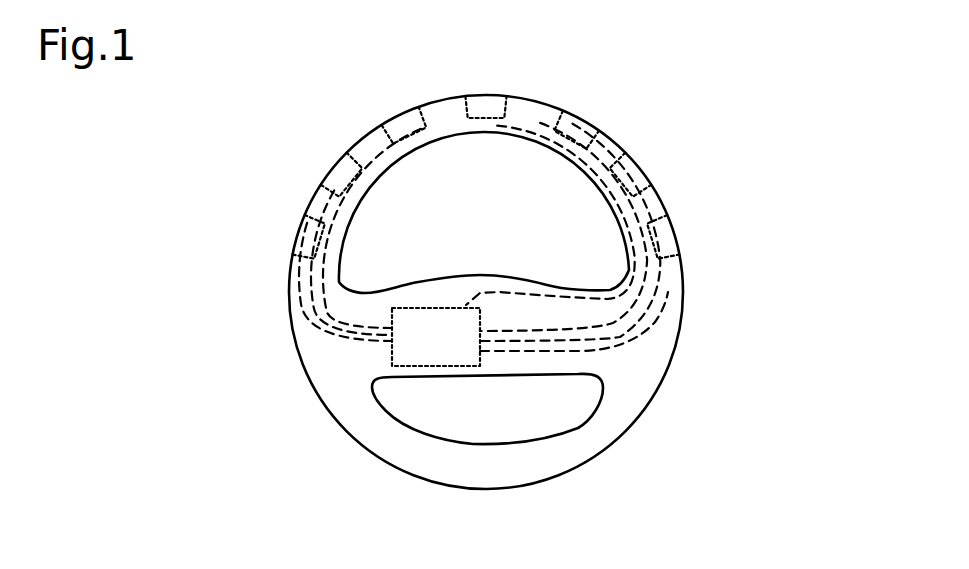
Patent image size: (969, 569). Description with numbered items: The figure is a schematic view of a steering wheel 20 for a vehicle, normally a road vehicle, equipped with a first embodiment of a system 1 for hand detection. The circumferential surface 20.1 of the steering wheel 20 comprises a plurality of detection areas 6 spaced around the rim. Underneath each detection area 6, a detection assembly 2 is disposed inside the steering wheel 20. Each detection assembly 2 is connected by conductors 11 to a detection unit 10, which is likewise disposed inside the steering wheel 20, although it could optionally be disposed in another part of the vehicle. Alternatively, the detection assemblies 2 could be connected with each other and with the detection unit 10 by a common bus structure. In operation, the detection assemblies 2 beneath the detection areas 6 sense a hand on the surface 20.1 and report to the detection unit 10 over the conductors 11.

The system for hand detection 1 is at (813, 113).
The detection assembly 2 is at (483, 100).
The detection area 6 is at (421, 93).
The detection unit 10 is at (453, 351).
The conductors 11 is at (347, 280).
The steering wheel 20 is at (505, 322).
The circumferential surface 20.1 is at (546, 85).